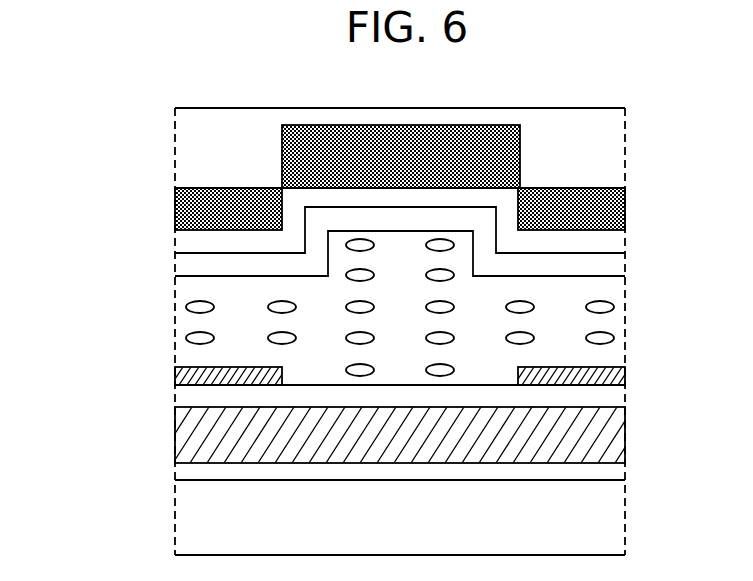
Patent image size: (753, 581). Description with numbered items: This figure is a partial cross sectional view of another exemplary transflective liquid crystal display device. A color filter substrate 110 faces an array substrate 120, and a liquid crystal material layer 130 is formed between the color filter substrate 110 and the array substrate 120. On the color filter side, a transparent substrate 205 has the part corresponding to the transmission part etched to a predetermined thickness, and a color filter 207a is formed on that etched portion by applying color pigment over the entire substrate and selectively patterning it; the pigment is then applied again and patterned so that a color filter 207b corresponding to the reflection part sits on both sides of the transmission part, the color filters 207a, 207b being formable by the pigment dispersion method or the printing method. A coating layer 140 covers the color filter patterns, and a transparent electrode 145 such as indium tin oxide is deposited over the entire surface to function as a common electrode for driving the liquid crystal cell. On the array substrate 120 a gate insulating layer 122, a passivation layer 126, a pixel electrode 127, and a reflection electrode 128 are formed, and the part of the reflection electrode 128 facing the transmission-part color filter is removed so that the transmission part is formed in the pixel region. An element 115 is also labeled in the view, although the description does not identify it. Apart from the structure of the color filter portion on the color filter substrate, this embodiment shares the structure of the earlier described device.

The color filter substrate 110 is at (175, 276).
The substrate 115 is at (620, 520).
The array substrate 120 is at (175, 368).
The gate insulating layer 122 is at (620, 470).
The passivation layer 126 is at (620, 437).
The pixel electrode 127 is at (625, 385).
The reflection electrode 128 is at (620, 373).
The liquid crystal material layer 130 is at (168, 282).
The coating layer 140 is at (620, 242).
The transparent electrode 145 is at (620, 263).
The transparent substrate 205 is at (620, 143).
The color filter 207a is at (401, 130).
The color filter 207b is at (620, 217).